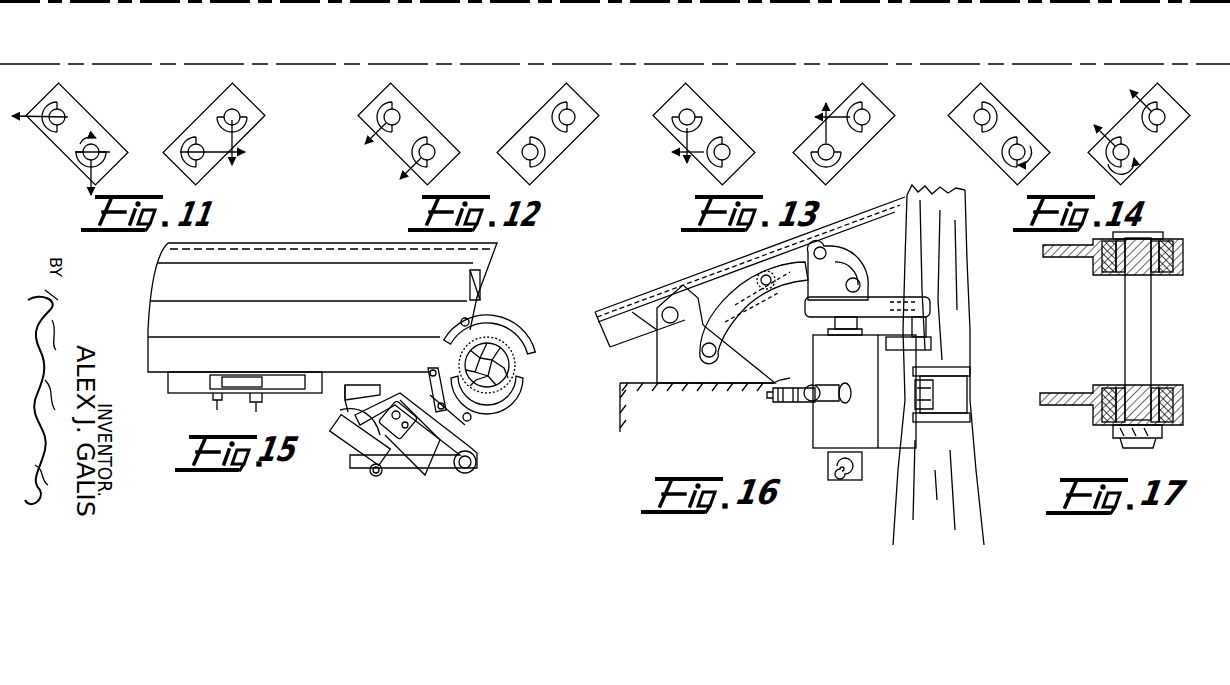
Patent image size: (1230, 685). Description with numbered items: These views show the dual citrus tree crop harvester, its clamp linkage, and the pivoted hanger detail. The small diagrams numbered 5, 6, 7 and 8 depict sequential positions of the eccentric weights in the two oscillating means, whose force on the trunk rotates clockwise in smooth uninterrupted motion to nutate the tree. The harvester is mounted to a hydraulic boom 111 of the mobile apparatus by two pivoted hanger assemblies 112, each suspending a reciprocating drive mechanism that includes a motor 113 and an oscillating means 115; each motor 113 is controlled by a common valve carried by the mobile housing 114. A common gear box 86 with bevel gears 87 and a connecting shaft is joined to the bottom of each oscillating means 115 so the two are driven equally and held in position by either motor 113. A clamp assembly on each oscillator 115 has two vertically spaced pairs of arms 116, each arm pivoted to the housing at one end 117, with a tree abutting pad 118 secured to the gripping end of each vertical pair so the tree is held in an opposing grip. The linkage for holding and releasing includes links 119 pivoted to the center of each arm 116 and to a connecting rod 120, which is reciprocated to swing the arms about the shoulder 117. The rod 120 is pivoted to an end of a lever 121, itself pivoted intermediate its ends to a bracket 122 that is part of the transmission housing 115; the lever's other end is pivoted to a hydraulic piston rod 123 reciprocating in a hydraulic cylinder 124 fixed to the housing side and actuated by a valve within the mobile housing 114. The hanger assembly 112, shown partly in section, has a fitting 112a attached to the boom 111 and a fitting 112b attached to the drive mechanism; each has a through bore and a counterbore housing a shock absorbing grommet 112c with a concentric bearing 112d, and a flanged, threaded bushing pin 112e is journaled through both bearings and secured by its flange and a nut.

In FIG. 11, the station 5 indicator 5 is at (145, 143).
In FIG. 12, the station 6 indicator 6 is at (433, 112).
In FIG. 13, the station 7 indicator 7 is at (696, 65).
In FIG. 14, the station 8 indicator 8 is at (1020, 17).
In FIG. 16, the common gear box 86 is at (862, 472).
In FIG. 16, the bevel gears 87 is at (830, 468).
In FIG. 16, the hydraulic boom 111 is at (700, 280).
In FIG. 15, the pivoted hanger assembly 112 is at (479, 276).
In FIG. 16, the fitting 112a is at (931, 306).
In FIG. 17, the fitting 112a is at (1076, 248).
In FIG. 16, the fitting 112b is at (932, 343).
In FIG. 17, the fitting 112b is at (1076, 397).
In FIG. 17, the shock absorbing grommet 112c is at (1172, 262).
In FIG. 17, the concentric bearing 112d is at (1156, 272).
In FIG. 16, the bushing pin 112e is at (927, 326).
In FIG. 17, the bushing pin 112e is at (1135, 322).
In FIG. 15, the motor 113 is at (402, 434).
In FIG. 16, the motor 113 is at (833, 323).
In FIG. 15, the mobile housing 114 is at (192, 385).
In FIG. 16, the mobile housing 114 is at (676, 418).
In FIG. 15, the oscillating means 115 is at (428, 474).
In FIG. 16, the oscillating means 115 is at (862, 373).
In FIG. 15, the arms 116 is at (495, 338).
In FIG. 16, the arms 116 is at (970, 372).
In FIG. 15, the arm end 117 is at (471, 440).
In FIG. 15, the abutting pad 118 is at (508, 356).
In FIG. 16, the abutting pad 118 is at (966, 394).
In FIG. 15, the links 119 is at (470, 321).
In FIG. 15, the connecting rod 120 is at (469, 421).
In FIG. 16, the connecting rod 120 is at (828, 392).
In FIG. 15, the lever 121 is at (370, 472).
In FIG. 15, the bracket 122 is at (357, 452).
In FIG. 15, the hydraulic piston rod 123 is at (340, 424).
In FIG. 15, the hydraulic cylinder 124 is at (346, 402).
In FIG. 16, the hydraulic cylinder 124 is at (802, 390).